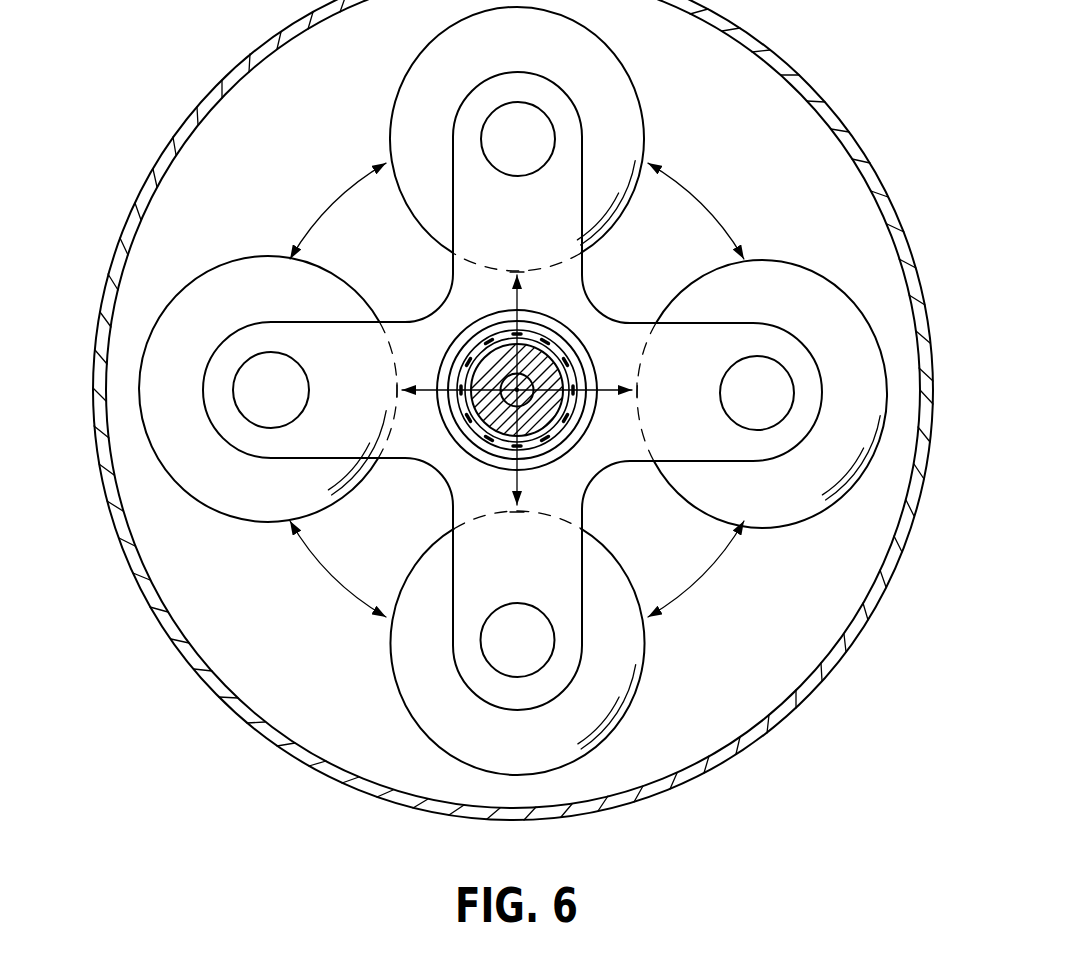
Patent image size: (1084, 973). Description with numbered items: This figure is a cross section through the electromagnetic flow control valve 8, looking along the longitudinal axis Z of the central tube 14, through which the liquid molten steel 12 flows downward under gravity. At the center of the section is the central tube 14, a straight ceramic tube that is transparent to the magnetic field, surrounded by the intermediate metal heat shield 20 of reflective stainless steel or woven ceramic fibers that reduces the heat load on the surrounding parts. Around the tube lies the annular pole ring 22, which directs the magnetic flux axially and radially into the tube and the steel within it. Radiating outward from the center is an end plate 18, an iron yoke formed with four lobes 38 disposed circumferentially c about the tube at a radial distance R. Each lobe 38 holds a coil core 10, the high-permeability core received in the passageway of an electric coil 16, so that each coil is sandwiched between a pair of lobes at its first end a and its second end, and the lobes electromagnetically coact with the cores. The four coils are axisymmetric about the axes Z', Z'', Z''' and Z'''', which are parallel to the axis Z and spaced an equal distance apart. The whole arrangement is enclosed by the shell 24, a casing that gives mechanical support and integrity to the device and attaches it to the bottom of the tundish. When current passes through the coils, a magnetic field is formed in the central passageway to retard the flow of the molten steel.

The electromagnetic flow control valve 8 is at (878, 186).
The coil core 10 is at (743, 413).
The liquid molten steel 12 is at (490, 367).
The central tube 14 is at (562, 422).
The electric coil 16 is at (771, 263).
The end plate 18 is at (465, 276).
The intermediate metal heat shield 20 is at (543, 357).
The pole ring 22 is at (542, 272).
The shell 24 is at (846, 130).
The lobe 38 is at (583, 168).
The first end a is at (600, 45).
The circumferential position c is at (338, 194).
The radial distance R is at (516, 298).
The longitudinal axis Z is at (535, 349).
The coil axis Z' is at (736, 434).
The coil axis Z'' is at (587, 655).
The coil axis Z''' is at (253, 460).
The coil axis Z'''' is at (586, 105).